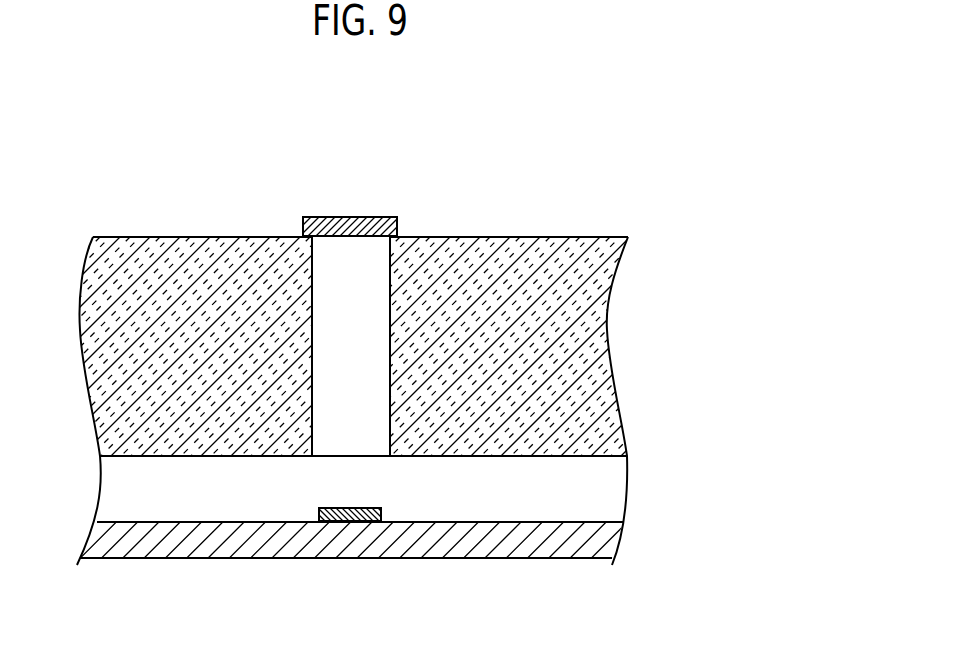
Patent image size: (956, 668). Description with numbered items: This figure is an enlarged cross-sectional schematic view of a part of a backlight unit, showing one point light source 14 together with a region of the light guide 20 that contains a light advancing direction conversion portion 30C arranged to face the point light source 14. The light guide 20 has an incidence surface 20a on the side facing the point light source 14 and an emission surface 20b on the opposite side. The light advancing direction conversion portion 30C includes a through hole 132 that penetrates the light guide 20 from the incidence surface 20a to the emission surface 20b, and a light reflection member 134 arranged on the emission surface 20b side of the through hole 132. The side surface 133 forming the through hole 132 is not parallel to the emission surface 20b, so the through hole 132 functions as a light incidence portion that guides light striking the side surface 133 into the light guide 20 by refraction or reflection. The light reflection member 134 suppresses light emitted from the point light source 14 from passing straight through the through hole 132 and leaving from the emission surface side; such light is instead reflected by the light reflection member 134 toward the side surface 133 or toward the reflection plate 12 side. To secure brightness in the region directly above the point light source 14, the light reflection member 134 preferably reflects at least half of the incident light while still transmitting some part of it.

The reflection plate 12 is at (549, 548).
The point light source 14 is at (372, 507).
The light guide 20 is at (548, 250).
The incidence surface 20a is at (594, 458).
The emission surface 20b is at (607, 237).
The light advancing direction conversion portion 30C is at (405, 170).
The through hole 132 is at (340, 256).
The side surface 133 is at (312, 280).
The light reflection member 134 is at (362, 217).